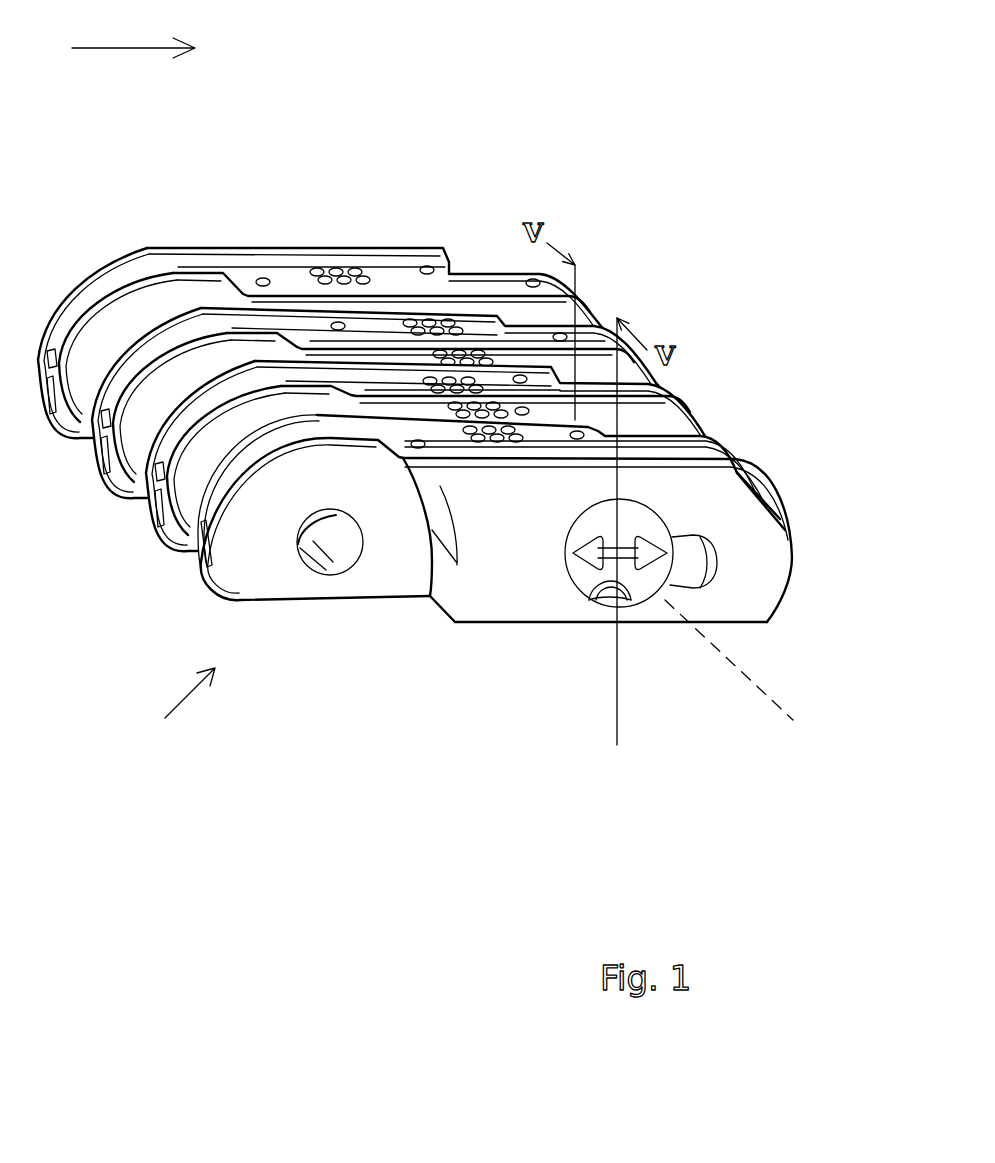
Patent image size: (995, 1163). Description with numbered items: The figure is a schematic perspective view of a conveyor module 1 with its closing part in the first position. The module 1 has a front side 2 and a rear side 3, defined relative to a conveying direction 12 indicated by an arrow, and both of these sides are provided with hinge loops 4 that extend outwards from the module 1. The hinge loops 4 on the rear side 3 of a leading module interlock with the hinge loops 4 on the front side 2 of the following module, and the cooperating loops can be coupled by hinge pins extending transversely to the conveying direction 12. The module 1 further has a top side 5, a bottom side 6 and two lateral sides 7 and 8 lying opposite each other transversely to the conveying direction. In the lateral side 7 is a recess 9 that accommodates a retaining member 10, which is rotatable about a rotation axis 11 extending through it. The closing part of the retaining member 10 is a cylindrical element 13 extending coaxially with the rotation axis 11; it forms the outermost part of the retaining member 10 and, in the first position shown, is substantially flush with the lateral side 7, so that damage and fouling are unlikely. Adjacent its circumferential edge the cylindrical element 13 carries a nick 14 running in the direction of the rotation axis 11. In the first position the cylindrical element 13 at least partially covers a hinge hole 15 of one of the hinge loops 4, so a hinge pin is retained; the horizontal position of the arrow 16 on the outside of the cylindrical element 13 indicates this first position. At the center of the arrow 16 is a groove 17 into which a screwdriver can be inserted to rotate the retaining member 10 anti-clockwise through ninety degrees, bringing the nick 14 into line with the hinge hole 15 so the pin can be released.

The module 1 is at (178, 708).
The front side 2 is at (787, 525).
The rear side 3 is at (210, 562).
The hinge loops 4 is at (404, 360).
The top side 5 is at (337, 333).
The bottom side 6 is at (528, 625).
The lateral side 7 is at (514, 517).
The lateral side 8 is at (212, 252).
The recess 9 is at (613, 598).
The retaining member 10 is at (673, 612).
The rotation axis 11 is at (775, 690).
The conveying direction 12 is at (133, 35).
The cylindrical element 13 is at (660, 567).
The nick 14 is at (600, 593).
The hinge hole 15 is at (693, 548).
The arrow 16 is at (588, 548).
The groove 17 is at (623, 557).